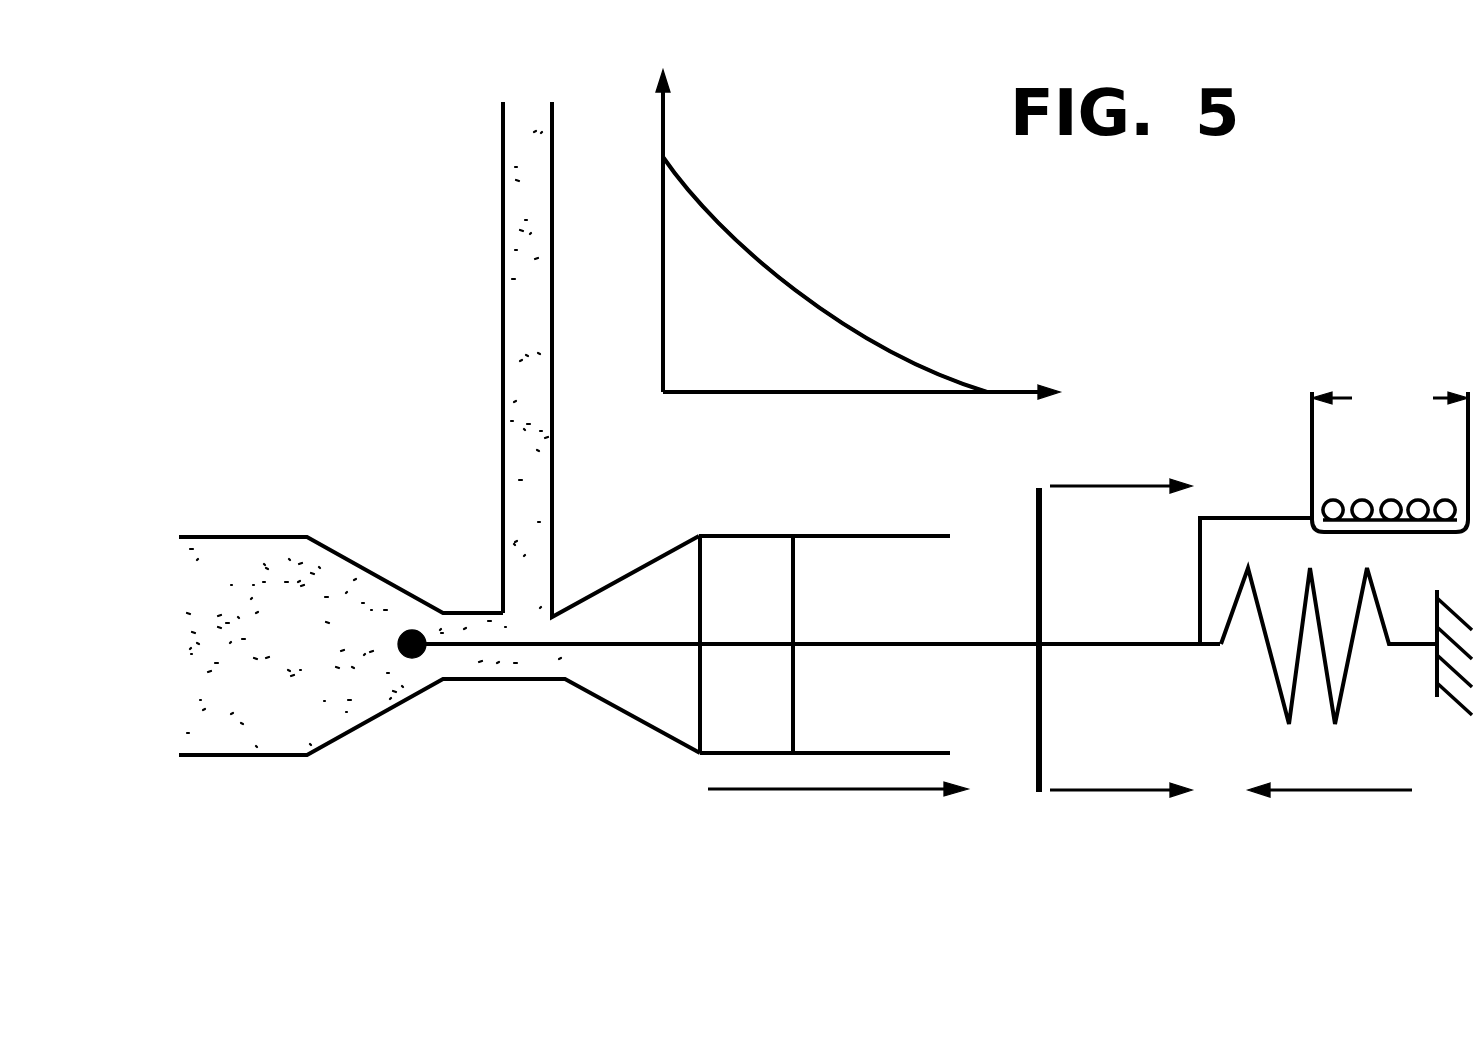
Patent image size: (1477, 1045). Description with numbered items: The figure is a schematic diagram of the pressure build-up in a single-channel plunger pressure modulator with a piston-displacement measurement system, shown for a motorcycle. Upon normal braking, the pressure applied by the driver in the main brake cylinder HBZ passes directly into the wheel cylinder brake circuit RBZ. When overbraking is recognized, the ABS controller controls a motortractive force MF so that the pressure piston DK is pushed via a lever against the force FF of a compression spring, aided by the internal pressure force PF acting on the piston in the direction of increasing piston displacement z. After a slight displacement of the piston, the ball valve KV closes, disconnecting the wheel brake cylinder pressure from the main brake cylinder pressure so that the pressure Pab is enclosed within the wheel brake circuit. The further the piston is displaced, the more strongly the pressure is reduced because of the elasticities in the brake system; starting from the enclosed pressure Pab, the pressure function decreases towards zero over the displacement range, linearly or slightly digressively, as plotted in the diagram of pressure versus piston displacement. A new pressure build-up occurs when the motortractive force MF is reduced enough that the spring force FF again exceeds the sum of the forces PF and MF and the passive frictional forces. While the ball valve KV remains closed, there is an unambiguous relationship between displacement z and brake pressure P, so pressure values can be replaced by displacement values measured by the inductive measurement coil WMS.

The main brake cylinder HBZ is at (420, 460).
The wheel cylinder brake circuit RBZ is at (551, 359).
The brake pressure P is at (523, 120).
The ball valve KV is at (423, 658).
The pressure piston DK is at (824, 644).
The internal pressure force PF is at (838, 809).
The motortractive force MF is at (1115, 658).
The compression spring force FF is at (1346, 702).
The inductive measurement coil WMS is at (1334, 513).
The enclosed pressure Pab is at (824, 253).